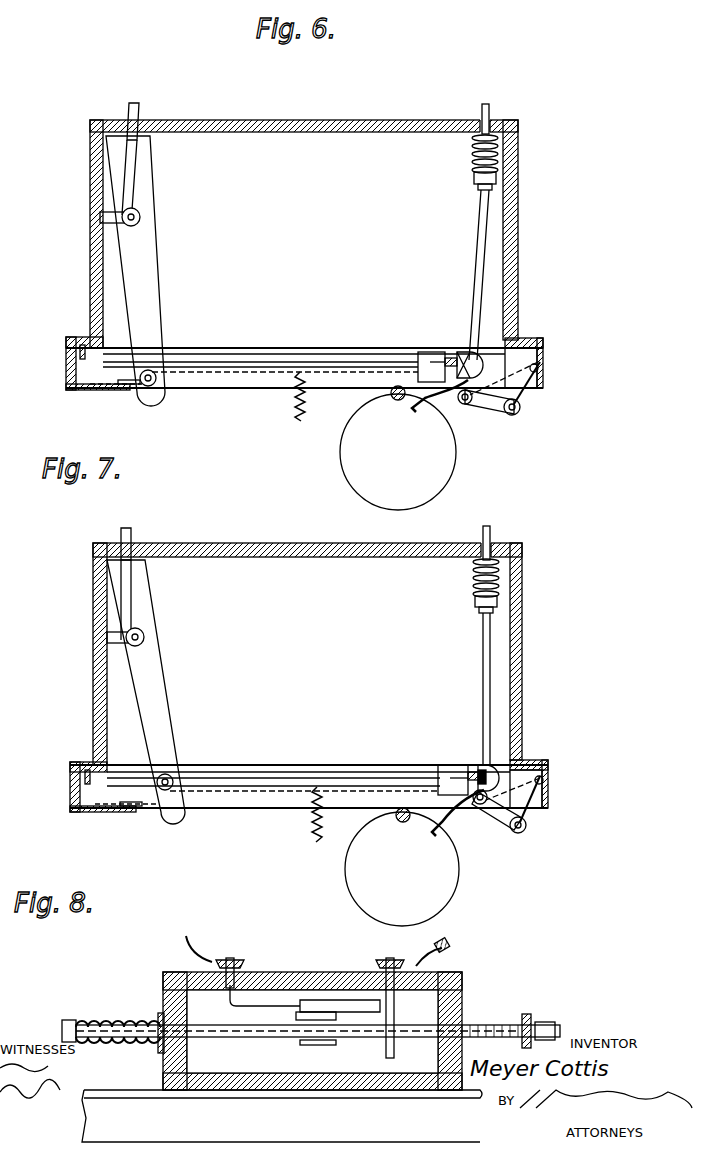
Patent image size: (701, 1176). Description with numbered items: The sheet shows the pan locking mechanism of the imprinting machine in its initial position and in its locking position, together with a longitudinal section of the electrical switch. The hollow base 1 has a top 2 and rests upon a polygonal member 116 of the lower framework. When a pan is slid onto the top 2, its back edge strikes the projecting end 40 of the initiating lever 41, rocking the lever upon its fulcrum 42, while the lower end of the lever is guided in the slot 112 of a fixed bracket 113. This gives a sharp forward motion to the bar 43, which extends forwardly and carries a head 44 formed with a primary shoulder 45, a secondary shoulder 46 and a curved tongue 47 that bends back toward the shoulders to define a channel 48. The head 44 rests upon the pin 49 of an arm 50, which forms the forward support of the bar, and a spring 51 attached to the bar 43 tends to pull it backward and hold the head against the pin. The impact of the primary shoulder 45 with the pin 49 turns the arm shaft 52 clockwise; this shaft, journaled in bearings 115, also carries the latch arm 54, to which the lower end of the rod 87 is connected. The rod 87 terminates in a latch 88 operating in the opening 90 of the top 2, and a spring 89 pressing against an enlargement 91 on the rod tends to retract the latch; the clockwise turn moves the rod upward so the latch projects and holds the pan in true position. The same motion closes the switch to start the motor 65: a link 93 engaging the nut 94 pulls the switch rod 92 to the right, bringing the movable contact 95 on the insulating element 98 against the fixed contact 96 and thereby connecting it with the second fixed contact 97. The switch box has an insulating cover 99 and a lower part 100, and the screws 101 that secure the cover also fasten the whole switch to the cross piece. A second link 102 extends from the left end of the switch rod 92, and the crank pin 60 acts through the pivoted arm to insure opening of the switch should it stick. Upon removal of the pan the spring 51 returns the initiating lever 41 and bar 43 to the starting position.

In FIG. 6, the hollow base 1 is at (560, 222).
In FIG. 7, the hollow base 1 is at (578, 624).
In FIG. 6, the top 2 is at (273, 120).
In FIG. 7, the top 2 is at (250, 543).
In FIG. 6, the projecting end 40 is at (133, 103).
In FIG. 7, the projecting end 40 is at (127, 528).
In FIG. 6, the initiating lever 41 is at (132, 157).
In FIG. 7, the initiating lever 41 is at (130, 578).
In FIG. 6, the fulcrum 42 is at (100, 212).
In FIG. 7, the fulcrum 42 is at (107, 636).
In FIG. 6, the bar 43 is at (238, 368).
In FIG. 7, the bar 43 is at (262, 788).
In FIG. 6, the head 44 is at (420, 355).
In FIG. 7, the head 44 is at (440, 767).
In FIG. 6, the primary shoulder 45 is at (452, 358).
In FIG. 7, the primary shoulder 45 is at (472, 772).
In FIG. 6, the secondary shoulder 46 is at (462, 350).
In FIG. 7, the secondary shoulder 46 is at (482, 764).
In FIG. 6, the curved tongue 47 is at (525, 340).
In FIG. 7, the curved tongue 47 is at (528, 762).
In FIG. 6, the channel 48 is at (484, 372).
In FIG. 7, the channel 48 is at (476, 808).
In FIG. 6, the pin 49 is at (467, 404).
In FIG. 7, the pin 49 is at (490, 775).
In FIG. 6, the arm 50 is at (540, 368).
In FIG. 7, the arm 50 is at (546, 779).
In FIG. 6, the spring 51 is at (302, 416).
In FIG. 7, the spring 51 is at (314, 836).
In FIG. 6, the arm shaft 52 is at (520, 410).
In FIG. 7, the arm shaft 52 is at (526, 828).
In FIG. 6, the latch arm 54 is at (514, 414).
In FIG. 7, the latch arm 54 is at (526, 832).
In FIG. 6, the crank pin 60 is at (388, 396).
In FIG. 7, the crank pin 60 is at (394, 817).
In FIG. 6, the rod 87 is at (484, 243).
In FIG. 7, the rod 87 is at (491, 645).
In FIG. 6, the latch 88 is at (485, 120).
In FIG. 7, the latch 88 is at (490, 535).
In FIG. 6, the spring 89 is at (498, 152).
In FIG. 7, the spring 89 is at (499, 585).
In FIG. 6, the opening 90 is at (508, 124).
In FIG. 7, the opening 90 is at (512, 548).
In FIG. 6, the enlargement 91 is at (496, 182).
In FIG. 7, the enlargement 91 is at (497, 602).
In FIG. 6, the slot 112 is at (214, 417).
In FIG. 7, the slot 112 is at (176, 839).
In FIG. 6, the fixed bracket 113 is at (124, 390).
In FIG. 7, the fixed bracket 113 is at (122, 808).
In FIG. 6, the bearings 115 is at (592, 409).
In FIG. 7, the bearings 115 is at (604, 833).
In FIG. 6, the polygonal member 116 is at (68, 372).
In FIG. 7, the polygonal member 116 is at (72, 790).
In FIG. 8, the motor 65 is at (90, 1112).
In FIG. 8, the switch rod 92 is at (460, 978).
In FIG. 8, the link 93 is at (527, 1014).
In FIG. 8, the nut 94 is at (546, 1022).
In FIG. 8, the movable contact 95 is at (318, 1010).
In FIG. 8, the fixed contact 96 is at (398, 1002).
In FIG. 8, the second fixed contact 97 is at (260, 1003).
In FIG. 8, the insulating element 98 is at (342, 996).
In FIG. 8, the cover 99 is at (238, 958).
In FIG. 8, the lower part of the box 100 is at (165, 1074).
In FIG. 8, the screws 101 is at (172, 976).
In FIG. 8, the second link 102 is at (158, 1018).